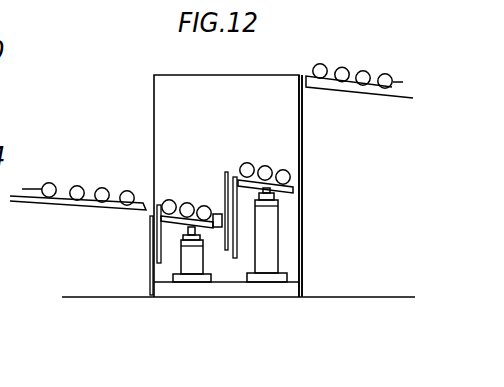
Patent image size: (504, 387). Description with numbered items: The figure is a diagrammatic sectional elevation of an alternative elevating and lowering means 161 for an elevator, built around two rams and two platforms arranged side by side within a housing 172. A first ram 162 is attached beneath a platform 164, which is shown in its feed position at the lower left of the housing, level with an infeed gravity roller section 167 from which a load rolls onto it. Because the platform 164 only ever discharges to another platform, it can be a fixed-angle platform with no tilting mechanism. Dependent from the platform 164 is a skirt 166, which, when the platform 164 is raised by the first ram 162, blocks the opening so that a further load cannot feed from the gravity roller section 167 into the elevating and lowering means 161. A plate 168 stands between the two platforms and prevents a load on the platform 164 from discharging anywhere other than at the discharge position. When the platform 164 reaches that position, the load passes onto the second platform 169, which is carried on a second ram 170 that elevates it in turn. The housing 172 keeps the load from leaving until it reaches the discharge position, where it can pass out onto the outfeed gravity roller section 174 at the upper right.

The elevating and lowering means 161 is at (153, 97).
The first ram 162 is at (187, 265).
The platform 164 is at (215, 224).
The skirt 166 is at (162, 247).
The gravity roller section 167 is at (60, 200).
The plate 168 is at (225, 185).
The platform 169 is at (293, 190).
The second ram 170 is at (266, 260).
The housing 172 is at (303, 147).
The gravity roller section 174 is at (379, 89).